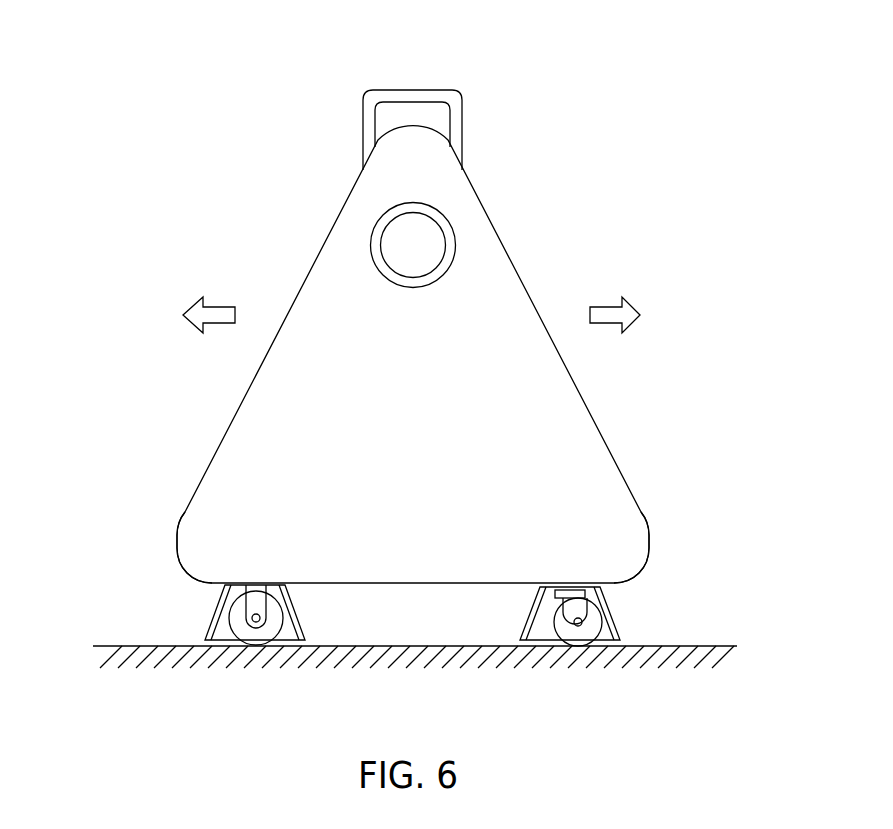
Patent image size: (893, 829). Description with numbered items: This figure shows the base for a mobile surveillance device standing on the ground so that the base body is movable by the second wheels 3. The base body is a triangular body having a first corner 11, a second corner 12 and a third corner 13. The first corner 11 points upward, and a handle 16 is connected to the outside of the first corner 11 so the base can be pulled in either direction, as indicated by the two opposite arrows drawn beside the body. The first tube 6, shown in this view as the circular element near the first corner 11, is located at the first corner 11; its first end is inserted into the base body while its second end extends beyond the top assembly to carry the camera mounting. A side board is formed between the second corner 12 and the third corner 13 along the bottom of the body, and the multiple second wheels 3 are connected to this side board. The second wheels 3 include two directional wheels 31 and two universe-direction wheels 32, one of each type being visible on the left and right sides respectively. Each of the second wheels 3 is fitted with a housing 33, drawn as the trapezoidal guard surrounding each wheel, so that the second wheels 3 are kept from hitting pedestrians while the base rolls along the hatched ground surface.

The first corner 11 is at (390, 130).
The handle 16 is at (422, 90).
The first tube 6 is at (372, 237).
The second corner 12 is at (178, 558).
The third corner 13 is at (648, 560).
The second wheels 3 is at (222, 617).
The directional wheels 31 is at (292, 612).
The universe-direction wheels 32 is at (607, 610).
The housing 33 is at (220, 603).